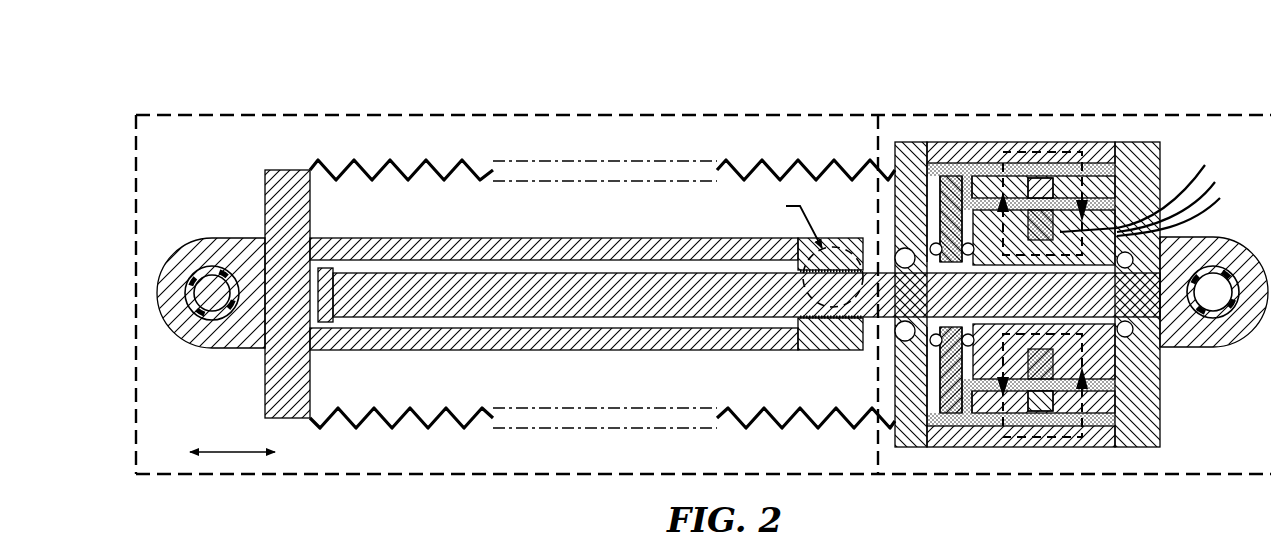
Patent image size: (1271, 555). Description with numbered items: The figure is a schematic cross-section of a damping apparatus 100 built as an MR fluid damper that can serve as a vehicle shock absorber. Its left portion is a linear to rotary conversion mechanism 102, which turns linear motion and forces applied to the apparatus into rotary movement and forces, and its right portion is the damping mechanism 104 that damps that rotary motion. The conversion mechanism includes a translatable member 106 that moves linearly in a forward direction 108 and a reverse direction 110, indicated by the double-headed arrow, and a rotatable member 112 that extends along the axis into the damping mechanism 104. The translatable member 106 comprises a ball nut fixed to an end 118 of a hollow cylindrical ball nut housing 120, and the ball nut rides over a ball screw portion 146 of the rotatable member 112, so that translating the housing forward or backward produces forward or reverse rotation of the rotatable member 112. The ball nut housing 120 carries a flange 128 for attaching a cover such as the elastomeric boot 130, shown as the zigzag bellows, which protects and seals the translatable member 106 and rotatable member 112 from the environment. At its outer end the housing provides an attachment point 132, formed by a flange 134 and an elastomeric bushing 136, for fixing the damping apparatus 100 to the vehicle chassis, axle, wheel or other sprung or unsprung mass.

The damping apparatus 100 is at (722, 92).
The linear to rotary conversion mechanism 102 is at (478, 108).
The damping mechanism 104 is at (938, 110).
The translatable member 106 is at (735, 236).
The forward direction 108 is at (189, 453).
The reverse direction 110 is at (273, 453).
The rotatable member 112 is at (573, 273).
The end of ball nut housing 118 is at (800, 348).
The ball nut housing 120 is at (398, 238).
The flange 128 is at (286, 170).
The elastomeric boot 130 is at (355, 160).
The attachment point 132 is at (210, 266).
The flange 134 is at (232, 257).
The elastomeric bushing 136 is at (192, 242).
The ball screw portion 146 is at (628, 295).